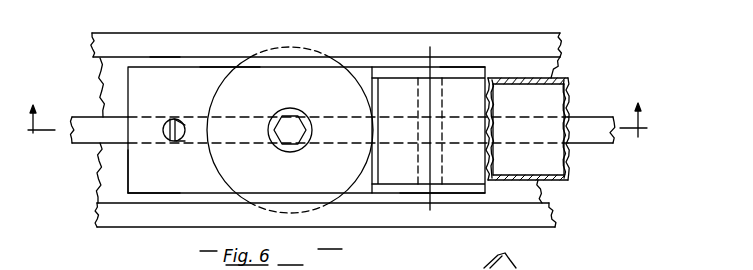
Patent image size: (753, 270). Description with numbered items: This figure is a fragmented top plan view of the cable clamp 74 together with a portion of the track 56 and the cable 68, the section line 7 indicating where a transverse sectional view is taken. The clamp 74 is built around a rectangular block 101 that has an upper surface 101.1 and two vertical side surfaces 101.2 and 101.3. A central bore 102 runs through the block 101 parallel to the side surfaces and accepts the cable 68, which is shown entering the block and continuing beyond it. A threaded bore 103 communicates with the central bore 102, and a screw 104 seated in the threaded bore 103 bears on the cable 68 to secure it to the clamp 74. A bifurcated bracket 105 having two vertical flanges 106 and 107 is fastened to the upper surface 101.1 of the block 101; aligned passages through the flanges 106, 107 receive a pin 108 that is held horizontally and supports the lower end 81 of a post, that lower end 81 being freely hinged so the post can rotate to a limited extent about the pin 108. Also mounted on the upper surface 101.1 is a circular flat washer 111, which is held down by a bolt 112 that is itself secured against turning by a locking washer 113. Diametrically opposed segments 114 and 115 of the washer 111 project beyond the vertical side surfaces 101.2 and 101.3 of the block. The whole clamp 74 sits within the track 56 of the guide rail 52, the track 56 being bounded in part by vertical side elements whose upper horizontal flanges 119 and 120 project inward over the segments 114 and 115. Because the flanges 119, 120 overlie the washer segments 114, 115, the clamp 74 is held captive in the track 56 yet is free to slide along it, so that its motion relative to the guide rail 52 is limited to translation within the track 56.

The section line 7- 7 is at (337, 131).
The upper horizontal flange 120 is at (101, 39).
The upper horizontal flange 119 is at (105, 218).
The cable clamp 74 is at (163, 59).
The rectangular block 101 is at (209, 122).
The upper surface 101.1 is at (185, 191).
The vertical side surface 101.2 is at (160, 194).
The vertical side surface 101.3 is at (226, 67).
The washer segment 115 is at (298, 47).
The washer segment 114 is at (262, 212).
The circular flat washer 111 is at (268, 178).
The bolt 112 is at (280, 118).
The locking washer 113 is at (290, 112).
The threaded bore 103 is at (170, 120).
The screw 104 is at (204, 86).
The central bore 102 is at (180, 144).
The vertical flange 106 is at (393, 70).
The bifurcated bracket 105 is at (490, 67).
The pin 108 is at (438, 170).
The vertical flange 107 is at (431, 185).
The track 56 is at (561, 61).
The guide rail 52 is at (572, 80).
The lower end of post 81 is at (466, 102).
The cable 68 is at (578, 132).